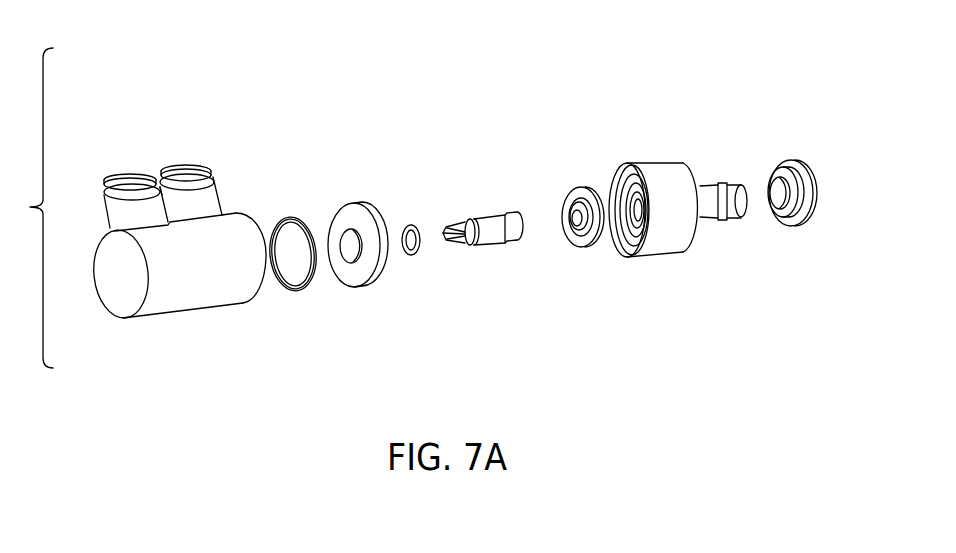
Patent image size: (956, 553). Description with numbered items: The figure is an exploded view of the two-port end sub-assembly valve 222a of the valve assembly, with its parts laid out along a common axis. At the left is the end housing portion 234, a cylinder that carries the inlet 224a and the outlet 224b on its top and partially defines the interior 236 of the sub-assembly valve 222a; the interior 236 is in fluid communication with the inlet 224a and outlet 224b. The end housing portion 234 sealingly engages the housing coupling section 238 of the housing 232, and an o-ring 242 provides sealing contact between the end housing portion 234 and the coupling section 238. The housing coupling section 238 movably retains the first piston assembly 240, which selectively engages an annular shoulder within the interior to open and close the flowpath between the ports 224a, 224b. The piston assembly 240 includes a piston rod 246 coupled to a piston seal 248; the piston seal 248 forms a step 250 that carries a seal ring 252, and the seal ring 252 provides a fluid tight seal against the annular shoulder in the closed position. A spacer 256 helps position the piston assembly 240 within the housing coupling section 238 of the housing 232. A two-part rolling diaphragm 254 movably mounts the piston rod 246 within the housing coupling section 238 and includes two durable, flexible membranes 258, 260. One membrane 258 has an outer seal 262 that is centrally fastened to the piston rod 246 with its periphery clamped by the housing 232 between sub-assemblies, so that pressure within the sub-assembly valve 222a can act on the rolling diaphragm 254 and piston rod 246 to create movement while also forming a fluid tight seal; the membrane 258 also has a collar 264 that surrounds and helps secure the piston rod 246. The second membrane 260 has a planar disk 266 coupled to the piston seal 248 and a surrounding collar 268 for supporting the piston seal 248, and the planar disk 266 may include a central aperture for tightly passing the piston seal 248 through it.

The sub-assembly valve 222a is at (478, 75).
The inlet 224a is at (112, 178).
The outlet 224b is at (190, 170).
The housing 232 is at (115, 288).
The end housing portion 234 is at (172, 300).
The interior 236 is at (262, 218).
The housing coupling section 238 is at (662, 167).
The first piston assembly 240 is at (493, 208).
The o-ring 242 is at (289, 291).
The piston rod 246 is at (738, 222).
The piston seal 248 is at (492, 248).
The step 250 is at (470, 222).
The seal ring 252 is at (411, 256).
The rolling diaphragm 254 is at (575, 187).
The spacer 256 is at (348, 208).
The membrane 258 is at (807, 208).
The second membrane 260 is at (587, 236).
The outer seal 262 is at (806, 168).
The collar 264 is at (776, 184).
The planar disk 266 is at (596, 240).
The surrounding collar 268 is at (577, 218).